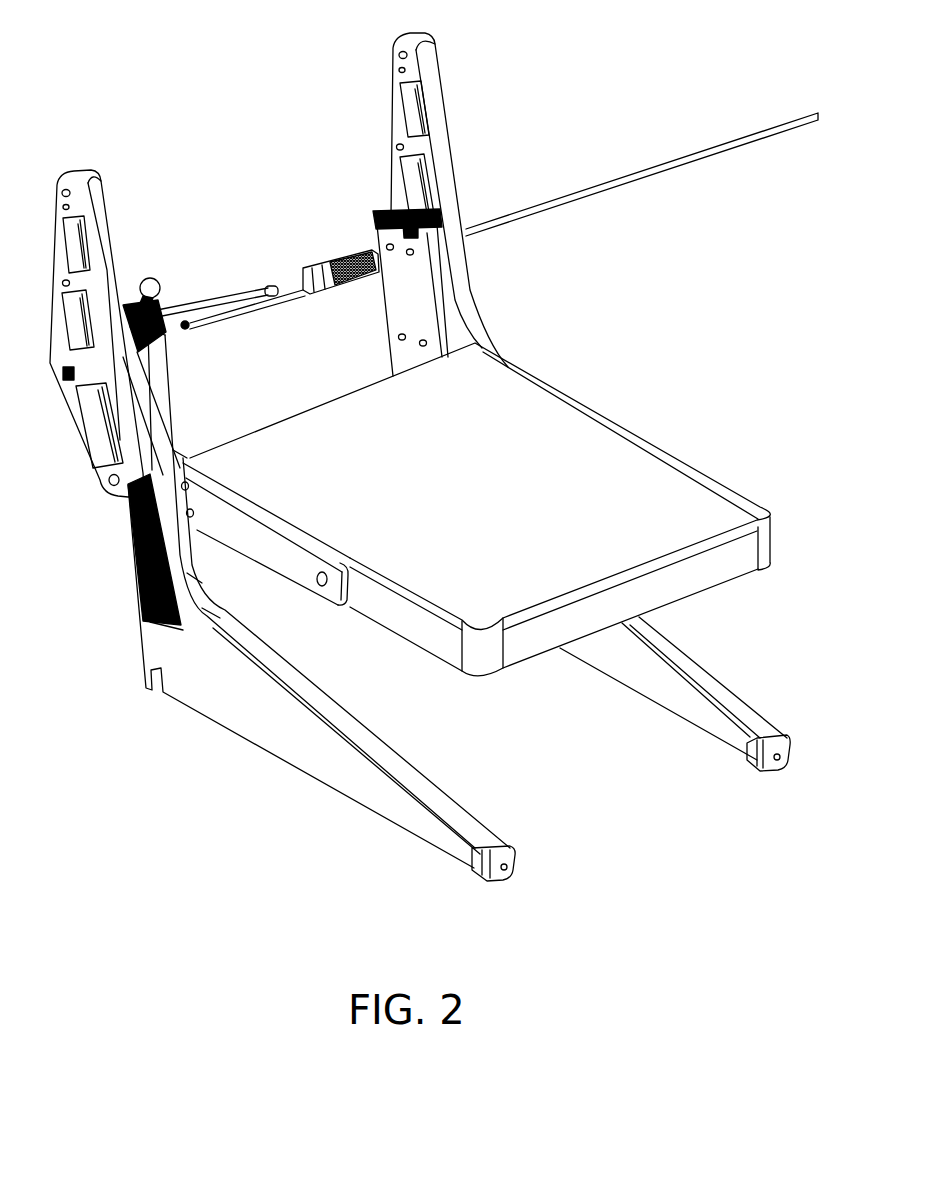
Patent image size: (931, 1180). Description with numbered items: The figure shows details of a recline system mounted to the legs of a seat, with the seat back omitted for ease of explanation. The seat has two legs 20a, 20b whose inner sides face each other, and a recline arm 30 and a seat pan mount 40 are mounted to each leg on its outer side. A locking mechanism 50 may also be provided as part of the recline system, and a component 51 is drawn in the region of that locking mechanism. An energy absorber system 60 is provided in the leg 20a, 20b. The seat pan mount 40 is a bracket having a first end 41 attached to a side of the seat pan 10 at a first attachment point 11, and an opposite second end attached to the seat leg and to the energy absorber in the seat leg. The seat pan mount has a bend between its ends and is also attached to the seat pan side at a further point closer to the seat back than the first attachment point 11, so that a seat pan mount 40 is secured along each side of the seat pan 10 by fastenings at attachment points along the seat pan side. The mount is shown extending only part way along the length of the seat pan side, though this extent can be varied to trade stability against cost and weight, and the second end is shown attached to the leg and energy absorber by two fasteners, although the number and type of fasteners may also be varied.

The seat pan 10 is at (653, 487).
The first attachment point 11 is at (327, 584).
The leg 20a is at (285, 605).
The leg 20b is at (697, 682).
The recline arm 30 is at (115, 260).
The seat pan mount 40 is at (281, 563).
The first end 41 is at (347, 607).
The locking mechanism 50 is at (251, 267).
The cylinder 51 is at (333, 262).
The energy absorber system 60 is at (138, 588).